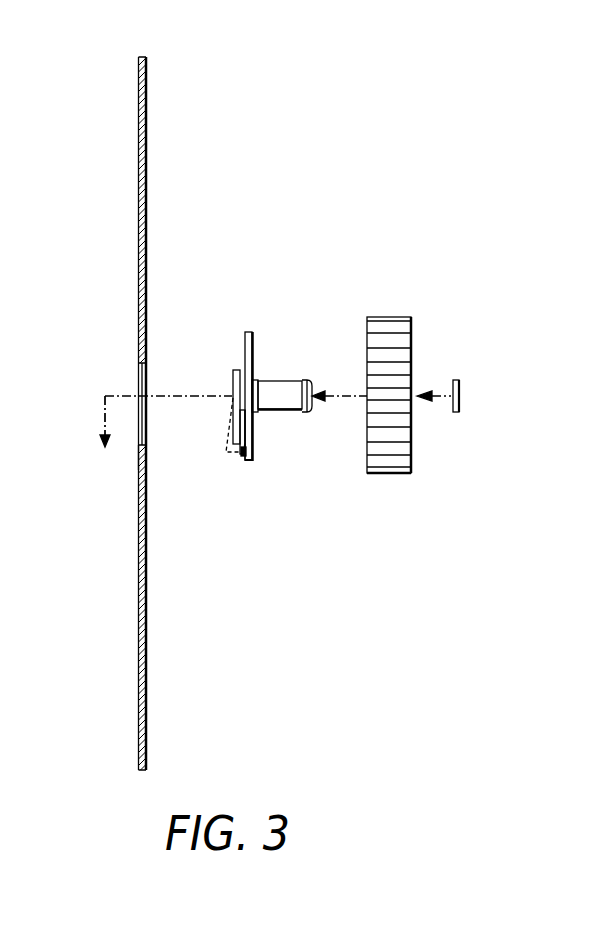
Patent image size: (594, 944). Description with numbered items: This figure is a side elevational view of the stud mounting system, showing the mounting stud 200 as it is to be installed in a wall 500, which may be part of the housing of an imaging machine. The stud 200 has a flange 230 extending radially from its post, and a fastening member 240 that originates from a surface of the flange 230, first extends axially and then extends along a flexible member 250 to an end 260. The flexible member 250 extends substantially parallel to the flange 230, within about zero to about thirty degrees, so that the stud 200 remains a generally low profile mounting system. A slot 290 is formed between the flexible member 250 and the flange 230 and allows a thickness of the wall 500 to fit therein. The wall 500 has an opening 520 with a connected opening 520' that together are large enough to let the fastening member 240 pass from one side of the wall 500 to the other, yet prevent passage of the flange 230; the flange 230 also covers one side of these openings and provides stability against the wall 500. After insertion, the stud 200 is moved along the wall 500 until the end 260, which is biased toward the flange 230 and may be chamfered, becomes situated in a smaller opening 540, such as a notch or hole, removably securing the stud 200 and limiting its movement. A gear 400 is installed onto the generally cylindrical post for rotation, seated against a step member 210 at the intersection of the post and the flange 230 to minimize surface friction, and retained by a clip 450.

The mounting stud 200 is at (253, 388).
The step member 210 is at (260, 381).
The flange 230 is at (249, 332).
The fastening member 240 is at (236, 403).
The flexible member 250 is at (232, 425).
The end 260 is at (240, 450).
The slot 290 is at (243, 420).
The gear 400 is at (390, 317).
The clip 450 is at (457, 380).
The wall 500 is at (147, 152).
The opening 520 is at (124, 393).
The connected opening 520' is at (93, 433).
The opening 540 is at (140, 462).